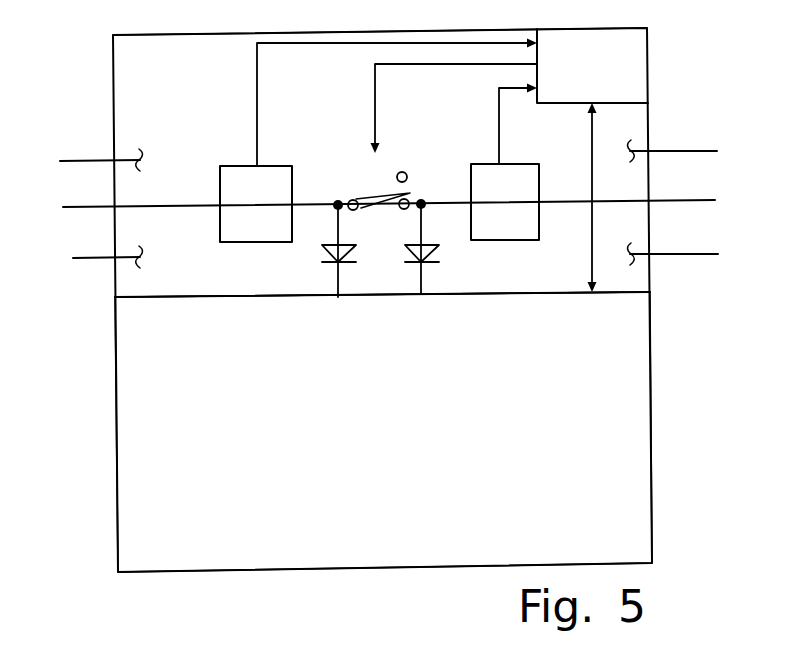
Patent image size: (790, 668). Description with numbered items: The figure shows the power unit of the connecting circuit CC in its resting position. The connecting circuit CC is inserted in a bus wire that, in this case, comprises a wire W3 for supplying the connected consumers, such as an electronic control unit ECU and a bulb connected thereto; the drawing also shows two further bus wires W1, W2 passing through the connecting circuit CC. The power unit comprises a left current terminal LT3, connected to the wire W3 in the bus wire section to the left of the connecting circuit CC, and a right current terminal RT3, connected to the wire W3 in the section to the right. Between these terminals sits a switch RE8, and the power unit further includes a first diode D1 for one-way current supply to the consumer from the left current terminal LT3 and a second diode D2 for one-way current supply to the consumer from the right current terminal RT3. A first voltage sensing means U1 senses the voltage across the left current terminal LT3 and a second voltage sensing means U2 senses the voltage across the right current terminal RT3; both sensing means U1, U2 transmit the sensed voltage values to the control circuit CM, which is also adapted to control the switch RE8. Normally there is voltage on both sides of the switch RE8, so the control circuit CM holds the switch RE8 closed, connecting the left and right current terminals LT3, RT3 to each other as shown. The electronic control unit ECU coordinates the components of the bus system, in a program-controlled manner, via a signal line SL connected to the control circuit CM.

The connecting circuit CC is at (174, 65).
The electronic control unit ECU is at (211, 336).
The control circuit CM is at (592, 66).
The first voltage sensing means U1 is at (378, 141).
The second voltage sensing means U2 is at (505, 162).
The switch RE8 is at (428, 108).
The signal line SL is at (591, 234).
The wire of bus wire W1 is at (81, 161).
The wire of bus wire W2 is at (82, 260).
The wire W3 is at (82, 210).
The left current terminal LT3 is at (333, 208).
The right current terminal RT3 is at (447, 211).
The first diode D1 is at (319, 251).
The second diode D2 is at (407, 249).